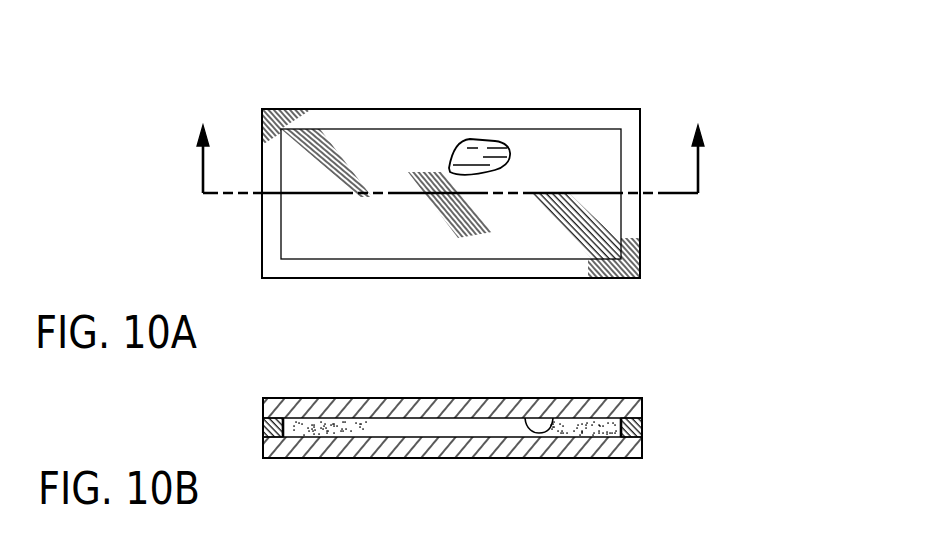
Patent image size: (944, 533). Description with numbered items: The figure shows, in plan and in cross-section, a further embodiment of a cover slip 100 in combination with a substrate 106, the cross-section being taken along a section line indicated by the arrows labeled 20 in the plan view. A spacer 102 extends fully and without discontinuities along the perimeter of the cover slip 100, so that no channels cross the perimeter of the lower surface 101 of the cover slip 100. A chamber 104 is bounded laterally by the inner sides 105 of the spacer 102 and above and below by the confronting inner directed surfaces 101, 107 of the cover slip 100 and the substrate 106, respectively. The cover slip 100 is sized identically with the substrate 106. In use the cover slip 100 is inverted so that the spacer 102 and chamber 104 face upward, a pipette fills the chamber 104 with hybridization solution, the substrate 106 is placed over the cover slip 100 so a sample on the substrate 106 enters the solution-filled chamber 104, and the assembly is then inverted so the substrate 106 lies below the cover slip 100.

In FIG. 10A, the display device 20 is at (134, 156).
In FIG. 10B, the display device 20 is at (756, 391).
In FIG. 10A, the cover slip 100 is at (646, 116).
In FIG. 10B, the cover slip 100 is at (648, 396).
In FIG. 10B, the lower surface 101 is at (557, 418).
In FIG. 10A, the spacer 102 is at (373, 134).
In FIG. 10B, the spacer 102 is at (256, 428).
In FIG. 10A, the chamber 104 is at (480, 137).
In FIG. 10B, the chamber 104 is at (447, 427).
In FIG. 10A, the inner sides 105 is at (620, 157).
In FIG. 10B, the inner sides 105 is at (300, 420).
In FIG. 10B, the substrate 106 is at (337, 458).
In FIG. 10B, the inner directed surface 107 is at (401, 426).